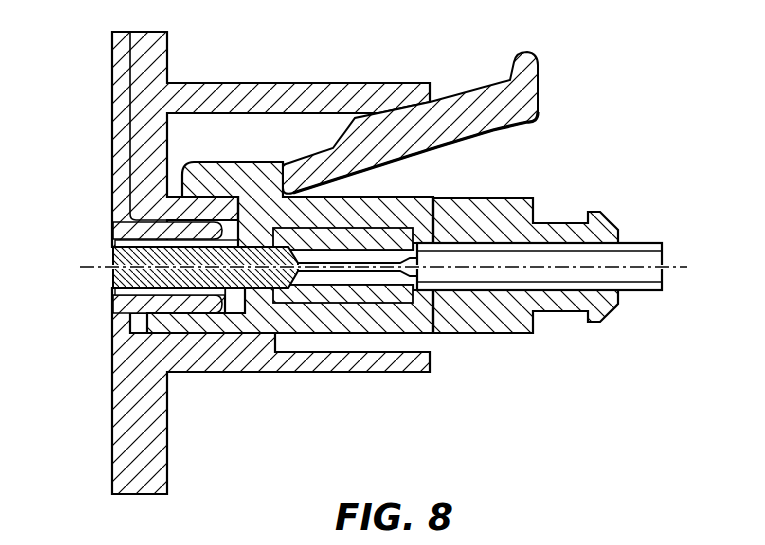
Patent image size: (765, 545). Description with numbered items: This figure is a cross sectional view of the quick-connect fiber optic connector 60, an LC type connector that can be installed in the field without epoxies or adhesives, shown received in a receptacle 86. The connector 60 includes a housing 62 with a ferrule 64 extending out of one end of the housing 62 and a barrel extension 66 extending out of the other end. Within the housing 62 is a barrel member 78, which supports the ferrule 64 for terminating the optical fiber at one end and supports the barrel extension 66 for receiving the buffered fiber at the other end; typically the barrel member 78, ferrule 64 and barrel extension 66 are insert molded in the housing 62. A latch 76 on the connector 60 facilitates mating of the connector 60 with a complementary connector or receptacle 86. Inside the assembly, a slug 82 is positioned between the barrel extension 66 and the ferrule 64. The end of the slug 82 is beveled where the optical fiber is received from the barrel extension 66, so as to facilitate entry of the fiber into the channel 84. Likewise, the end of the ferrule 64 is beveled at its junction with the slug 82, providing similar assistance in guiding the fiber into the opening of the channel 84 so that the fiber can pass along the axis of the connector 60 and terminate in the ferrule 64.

The quick-connect fiber optic connector 60 is at (372, 263).
The housing 62 is at (227, 192).
The ferrule 64 is at (128, 278).
The barrel extension 66 is at (632, 258).
The latch 76 is at (478, 103).
The barrel member 78 is at (433, 232).
The slug 82 is at (362, 240).
The channel 84 is at (398, 260).
The receptacle 86 is at (135, 126).